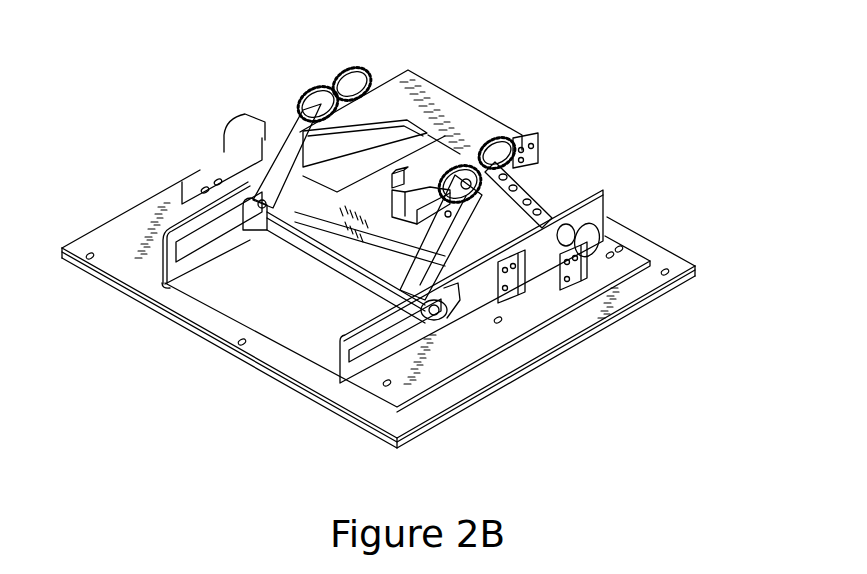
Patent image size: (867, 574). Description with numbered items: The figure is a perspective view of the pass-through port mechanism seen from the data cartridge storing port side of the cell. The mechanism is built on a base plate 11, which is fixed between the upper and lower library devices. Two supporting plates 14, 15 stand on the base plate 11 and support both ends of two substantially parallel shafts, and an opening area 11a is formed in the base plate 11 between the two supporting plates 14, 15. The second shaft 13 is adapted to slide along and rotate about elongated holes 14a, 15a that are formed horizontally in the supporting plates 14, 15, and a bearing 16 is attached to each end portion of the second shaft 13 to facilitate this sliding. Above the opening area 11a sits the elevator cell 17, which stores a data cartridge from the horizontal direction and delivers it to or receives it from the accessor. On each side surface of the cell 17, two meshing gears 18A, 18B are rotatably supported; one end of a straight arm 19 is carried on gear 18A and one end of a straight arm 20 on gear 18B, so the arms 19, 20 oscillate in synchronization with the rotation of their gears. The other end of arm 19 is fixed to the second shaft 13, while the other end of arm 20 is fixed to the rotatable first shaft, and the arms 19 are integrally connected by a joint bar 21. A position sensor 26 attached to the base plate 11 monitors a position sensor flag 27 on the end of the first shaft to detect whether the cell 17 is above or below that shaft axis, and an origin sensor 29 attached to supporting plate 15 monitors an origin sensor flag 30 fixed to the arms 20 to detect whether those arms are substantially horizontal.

The base plate 11 is at (628, 300).
The opening area 11a is at (243, 310).
The second shaft 13 is at (345, 267).
The supporting plate 14 is at (120, 272).
The elongated hole 14a is at (195, 242).
The supporting plate 15 is at (598, 188).
The elongated hole 15a is at (350, 360).
The bearing 16 is at (417, 330).
The cell 17 is at (427, 82).
The gear 18A is at (323, 90).
The gear 18B is at (357, 70).
The arm 19 is at (287, 132).
The arm 20 is at (548, 205).
The joint bar 21 is at (237, 137).
The position sensor 26 is at (565, 288).
The position sensor flag 27 is at (595, 222).
The origin sensor 29 is at (510, 295).
The origin sensor flag 30 is at (536, 148).